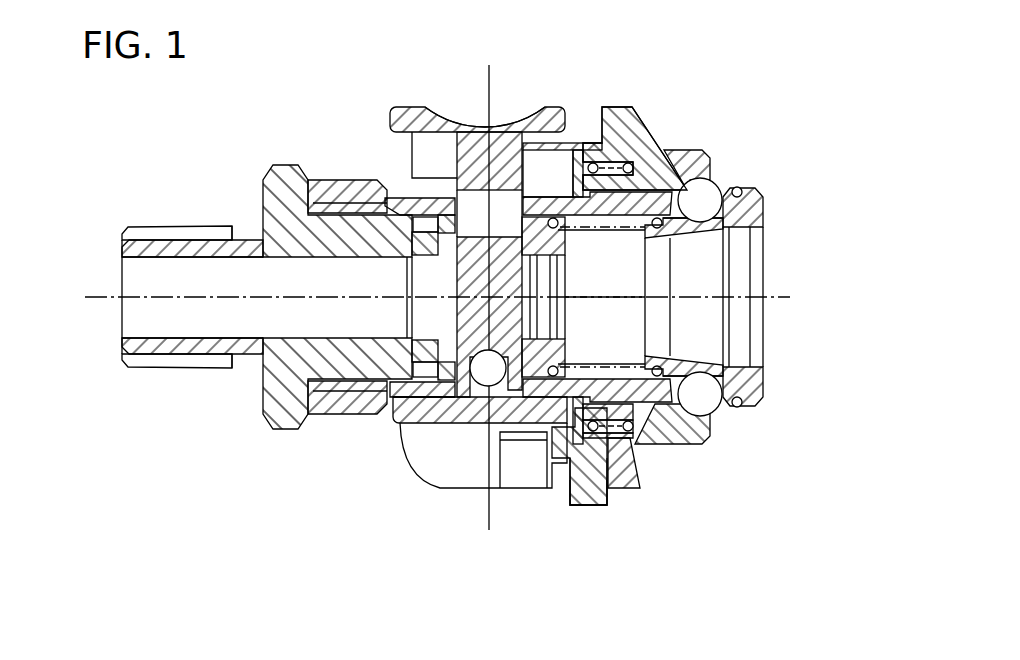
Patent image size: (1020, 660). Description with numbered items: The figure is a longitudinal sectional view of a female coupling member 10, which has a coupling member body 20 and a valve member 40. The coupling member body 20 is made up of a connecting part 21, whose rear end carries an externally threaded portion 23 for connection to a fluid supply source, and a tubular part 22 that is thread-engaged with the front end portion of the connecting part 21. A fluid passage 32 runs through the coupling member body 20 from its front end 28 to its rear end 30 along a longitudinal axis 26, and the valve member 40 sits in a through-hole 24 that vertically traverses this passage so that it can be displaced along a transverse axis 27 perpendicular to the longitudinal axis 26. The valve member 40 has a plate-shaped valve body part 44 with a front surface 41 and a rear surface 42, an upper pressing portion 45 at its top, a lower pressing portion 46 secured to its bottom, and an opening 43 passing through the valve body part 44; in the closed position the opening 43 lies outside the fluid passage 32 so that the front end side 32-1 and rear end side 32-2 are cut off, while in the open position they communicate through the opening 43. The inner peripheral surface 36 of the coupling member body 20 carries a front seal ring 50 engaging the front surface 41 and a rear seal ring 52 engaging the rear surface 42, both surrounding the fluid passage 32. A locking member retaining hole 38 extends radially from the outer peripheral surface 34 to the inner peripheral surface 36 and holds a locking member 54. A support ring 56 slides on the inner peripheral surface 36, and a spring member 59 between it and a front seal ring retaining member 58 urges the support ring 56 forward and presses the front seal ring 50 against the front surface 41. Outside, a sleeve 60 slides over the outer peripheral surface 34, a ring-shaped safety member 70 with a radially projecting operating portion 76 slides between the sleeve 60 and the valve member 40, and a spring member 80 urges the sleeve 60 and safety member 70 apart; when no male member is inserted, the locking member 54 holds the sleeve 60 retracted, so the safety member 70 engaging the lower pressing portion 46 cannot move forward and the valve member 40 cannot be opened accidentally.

The female coupling member 10 is at (722, 98).
The coupling member body 20 is at (335, 170).
The connecting part 21 is at (255, 232).
The tubular part 22 is at (407, 200).
The externally threaded portion 23 is at (153, 227).
The through-hole 24 is at (462, 131).
The longitudinal axis 26 is at (90, 296).
The transverse axis 27 is at (491, 82).
The front end 28 is at (765, 237).
The rear end 30 is at (122, 320).
The fluid passage 32 is at (121, 270).
The front end side of the fluid passage 32-1 is at (607, 323).
The rear end side of the fluid passage 32-2 is at (185, 320).
The outer peripheral surface 34 is at (740, 186).
The inner peripheral surface 36 is at (723, 240).
The locking member retaining hole 38 is at (683, 177).
The valve member 40 is at (422, 107).
The front surface 41 is at (613, 440).
The rear surface 42 is at (455, 345).
The opening 43 is at (527, 195).
The valve body part 44 is at (430, 350).
The upper pressing portion 45 is at (435, 105).
The lower pressing portion 46 is at (470, 413).
The front seal ring 50 is at (535, 400).
The rear seal ring 52 is at (416, 402).
The locking member 54 is at (708, 190).
The support ring 56 is at (693, 232).
The front seal ring retaining member 58 is at (602, 130).
The spring member 59 is at (650, 183).
The sleeve 60 is at (682, 425).
The safety member 70 is at (585, 506).
The operating portion 76 is at (597, 506).
The spring member 80 is at (620, 442).